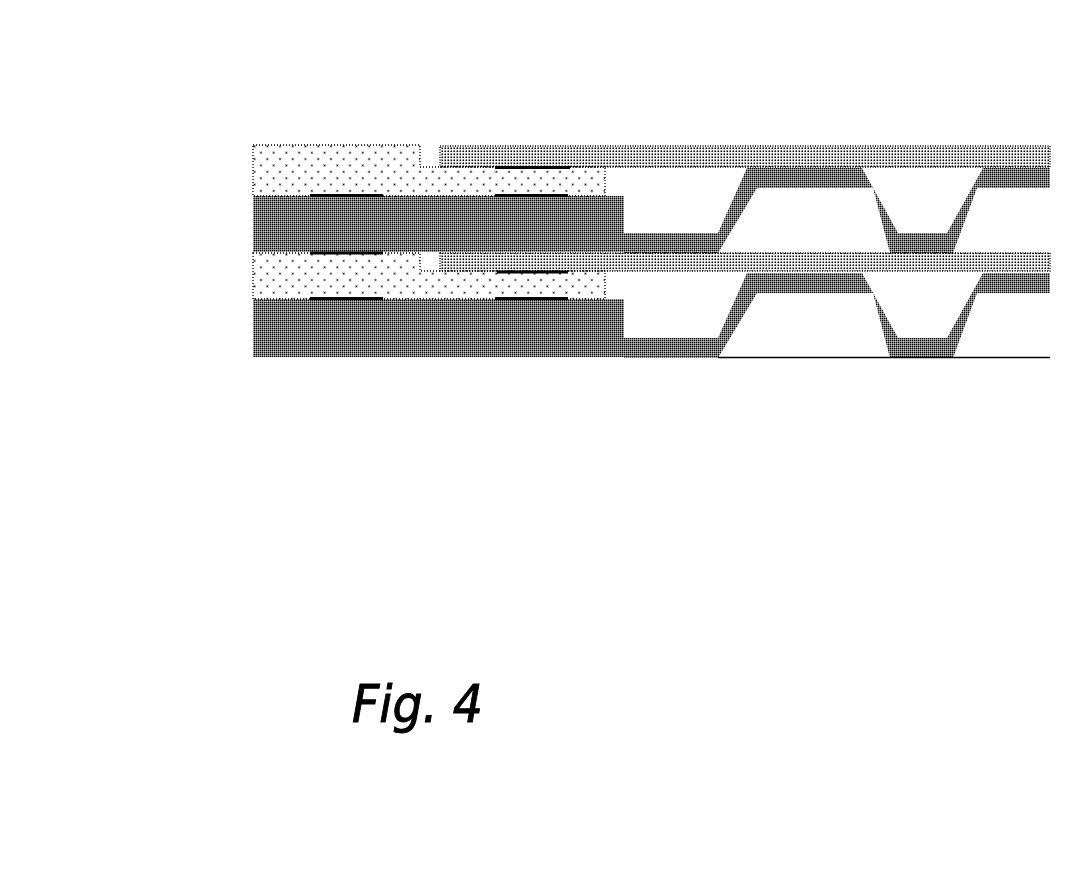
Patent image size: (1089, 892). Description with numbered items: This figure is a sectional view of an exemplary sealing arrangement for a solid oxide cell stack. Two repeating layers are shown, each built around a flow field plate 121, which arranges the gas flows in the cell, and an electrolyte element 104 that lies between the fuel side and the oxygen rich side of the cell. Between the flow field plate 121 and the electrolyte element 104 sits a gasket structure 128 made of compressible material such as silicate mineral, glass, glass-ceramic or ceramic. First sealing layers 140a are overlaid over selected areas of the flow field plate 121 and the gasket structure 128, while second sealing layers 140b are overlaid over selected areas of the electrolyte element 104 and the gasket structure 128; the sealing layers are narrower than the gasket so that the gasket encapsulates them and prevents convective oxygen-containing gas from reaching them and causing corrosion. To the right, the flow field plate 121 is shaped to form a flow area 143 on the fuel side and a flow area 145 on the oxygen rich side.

The electrolyte element 104 is at (682, 153).
The flow field plate 121 is at (253, 203).
The gasket structure 128 is at (318, 163).
The first sealing layer 140a is at (368, 253).
The second sealing layer 140b is at (520, 160).
The flow area on the fuel side 143 is at (867, 335).
The flow area on the oxygen rich side 145 is at (923, 303).